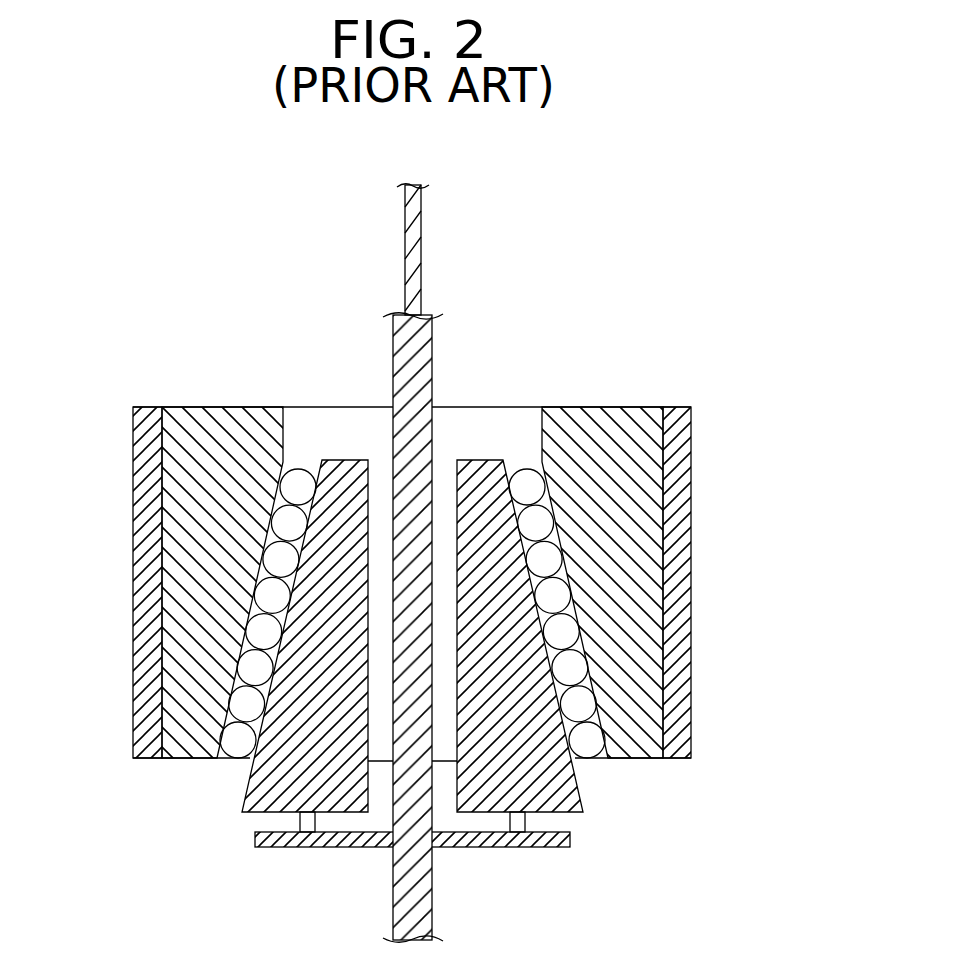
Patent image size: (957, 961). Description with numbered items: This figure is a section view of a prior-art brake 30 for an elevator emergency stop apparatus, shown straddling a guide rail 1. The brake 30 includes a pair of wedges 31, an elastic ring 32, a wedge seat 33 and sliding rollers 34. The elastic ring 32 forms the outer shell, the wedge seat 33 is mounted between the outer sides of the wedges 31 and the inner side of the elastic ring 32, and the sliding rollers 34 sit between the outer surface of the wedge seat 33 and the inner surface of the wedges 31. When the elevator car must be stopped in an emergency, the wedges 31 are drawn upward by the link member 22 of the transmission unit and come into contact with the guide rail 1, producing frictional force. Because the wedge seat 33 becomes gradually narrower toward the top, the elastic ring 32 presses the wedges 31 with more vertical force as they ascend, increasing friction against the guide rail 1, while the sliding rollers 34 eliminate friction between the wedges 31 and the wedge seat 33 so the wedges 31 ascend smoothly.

The guide rail 1 is at (422, 367).
The link member 22 is at (412, 242).
The brake 30 is at (700, 501).
The wedges 31 is at (267, 787).
The elastic ring 32 is at (148, 670).
The wedge seat 33 is at (213, 565).
The sliding rollers 34 is at (287, 528).